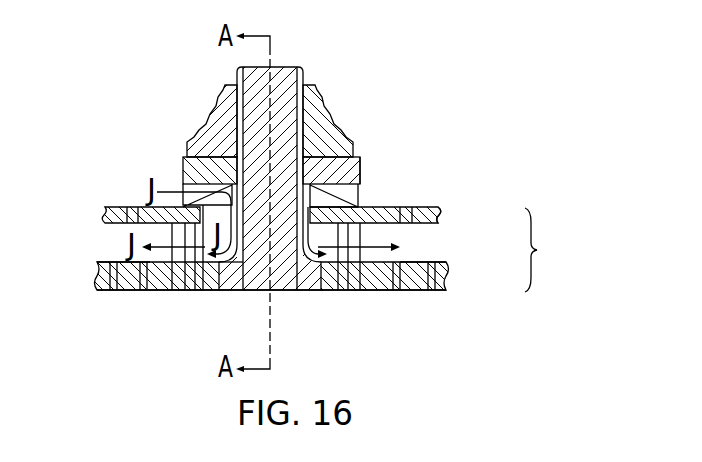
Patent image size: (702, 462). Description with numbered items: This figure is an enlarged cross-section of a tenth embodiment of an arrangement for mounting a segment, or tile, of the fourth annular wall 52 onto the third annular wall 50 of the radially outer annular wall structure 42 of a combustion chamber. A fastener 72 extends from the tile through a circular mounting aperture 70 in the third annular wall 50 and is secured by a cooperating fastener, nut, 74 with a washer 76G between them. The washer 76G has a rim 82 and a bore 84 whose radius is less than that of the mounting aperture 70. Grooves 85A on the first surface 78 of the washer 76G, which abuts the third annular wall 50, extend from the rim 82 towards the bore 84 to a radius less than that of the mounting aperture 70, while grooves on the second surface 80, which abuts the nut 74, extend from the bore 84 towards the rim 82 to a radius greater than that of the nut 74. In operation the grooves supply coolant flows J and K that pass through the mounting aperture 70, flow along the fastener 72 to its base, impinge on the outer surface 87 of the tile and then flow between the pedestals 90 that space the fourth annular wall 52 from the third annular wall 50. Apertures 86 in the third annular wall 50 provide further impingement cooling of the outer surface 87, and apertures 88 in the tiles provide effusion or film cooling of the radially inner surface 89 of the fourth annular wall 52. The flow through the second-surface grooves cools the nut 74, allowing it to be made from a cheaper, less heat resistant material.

The fastener 72 is at (297, 63).
The cooperating fastener, nut 74 is at (348, 132).
The second surface of the washer 80 is at (342, 158).
The washer 76G is at (365, 165).
The rim of the washer 82 is at (182, 160).
The grooves on the first surface of the washer 85A is at (318, 205).
The bore of the washer 84 is at (315, 193).
The apertures in the third annular wall 86 is at (122, 206).
The third annular wall 50 is at (437, 222).
The pedestals 90 is at (363, 237).
The radially outer surface of the fourth annular wall 87 is at (425, 260).
The radially outer annular wall structure 42 is at (538, 250).
The fourth annular wall 52 is at (443, 291).
The apertures in the segments or tiles 88 is at (140, 293).
The first surface of the washer 78 is at (182, 293).
The radially inner surface of the fourth annular wall 89 is at (247, 293).
The mounting aperture 70 is at (306, 293).